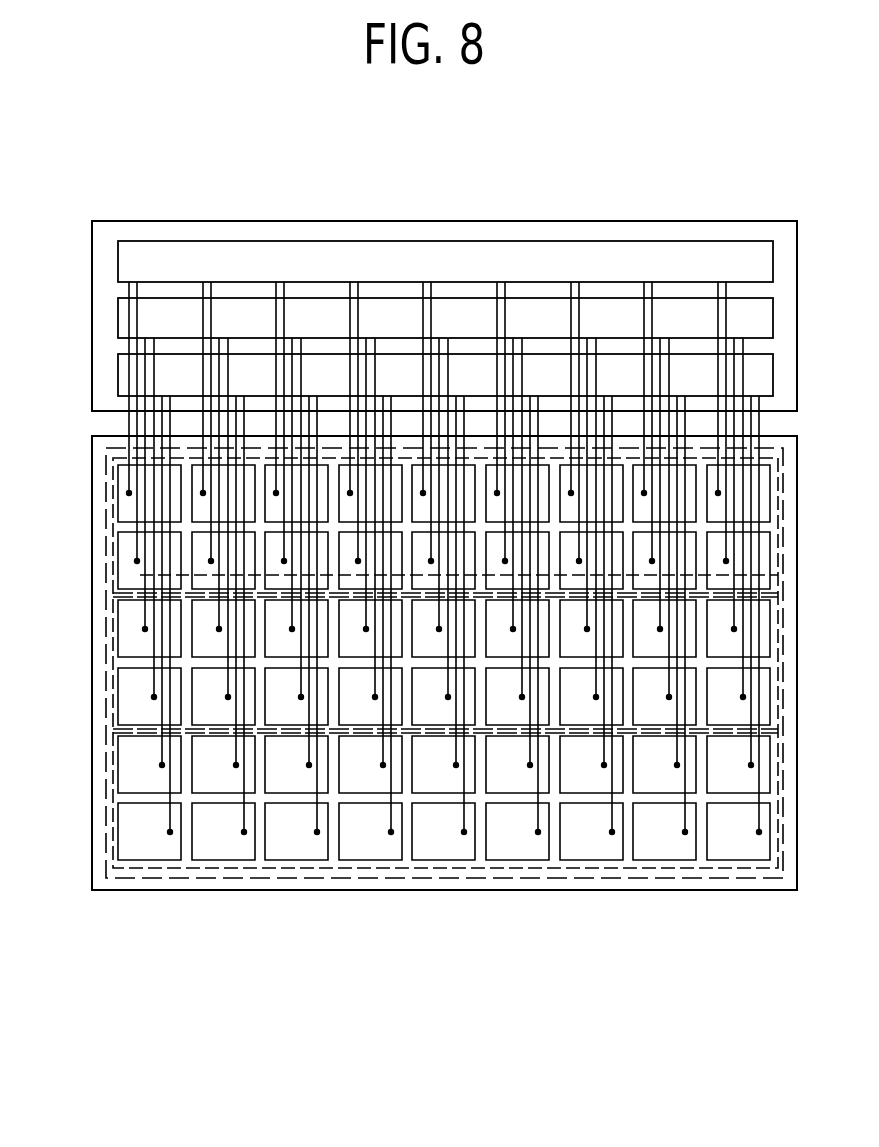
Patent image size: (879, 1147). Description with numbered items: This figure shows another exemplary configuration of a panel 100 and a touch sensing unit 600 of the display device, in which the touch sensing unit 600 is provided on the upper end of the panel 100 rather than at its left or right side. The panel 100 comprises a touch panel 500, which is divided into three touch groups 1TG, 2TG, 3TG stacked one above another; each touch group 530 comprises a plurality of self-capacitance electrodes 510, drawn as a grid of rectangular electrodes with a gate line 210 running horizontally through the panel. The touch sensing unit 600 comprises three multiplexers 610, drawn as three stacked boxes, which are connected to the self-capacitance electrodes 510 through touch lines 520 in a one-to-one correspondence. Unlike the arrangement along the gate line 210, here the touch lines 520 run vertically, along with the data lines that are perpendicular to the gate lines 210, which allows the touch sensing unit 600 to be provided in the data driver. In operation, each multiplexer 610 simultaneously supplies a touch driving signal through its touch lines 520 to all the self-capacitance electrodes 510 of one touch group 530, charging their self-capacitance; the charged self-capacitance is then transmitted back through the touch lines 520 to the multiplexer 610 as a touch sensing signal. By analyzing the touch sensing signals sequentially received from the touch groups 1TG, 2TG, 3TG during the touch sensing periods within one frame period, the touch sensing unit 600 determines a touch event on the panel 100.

The panel 100 is at (490, 890).
The gate line 210 is at (137, 575).
The touch panel 500 is at (367, 878).
The self-capacitance electrode 510 is at (158, 845).
The touch line 520 is at (244, 818).
The touch group 530 is at (290, 868).
The touch sensing unit 600 is at (680, 221).
The multiplexer 610 is at (598, 241).
The first touch group 1TG is at (112, 499).
The second touch group 2TG is at (112, 636).
The third touch group 3TG is at (112, 770).